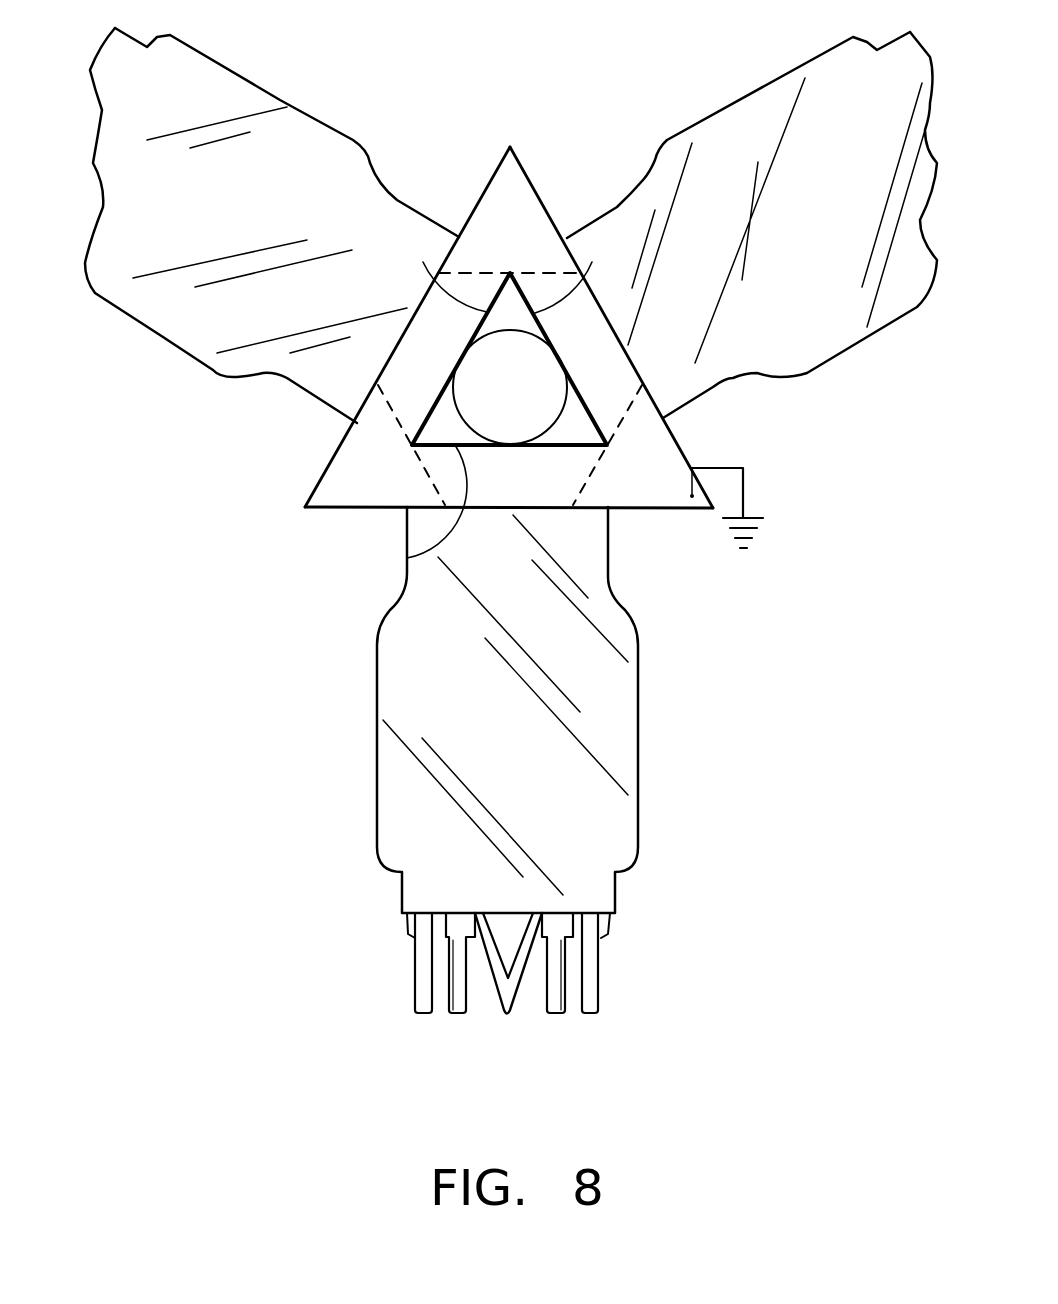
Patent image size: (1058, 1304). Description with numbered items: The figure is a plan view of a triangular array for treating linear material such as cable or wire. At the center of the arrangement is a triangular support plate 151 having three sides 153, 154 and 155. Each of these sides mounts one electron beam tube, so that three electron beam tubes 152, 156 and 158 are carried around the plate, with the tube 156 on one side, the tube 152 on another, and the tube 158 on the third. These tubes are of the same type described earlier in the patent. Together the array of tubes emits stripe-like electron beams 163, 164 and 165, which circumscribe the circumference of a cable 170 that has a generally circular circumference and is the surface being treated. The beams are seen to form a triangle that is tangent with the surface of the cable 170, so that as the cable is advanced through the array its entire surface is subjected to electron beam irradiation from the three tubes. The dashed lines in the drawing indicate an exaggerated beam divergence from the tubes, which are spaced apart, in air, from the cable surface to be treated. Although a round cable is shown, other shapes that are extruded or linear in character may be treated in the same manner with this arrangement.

The triangular support plate 151 is at (545, 130).
The electron beam tube 152 is at (838, 220).
The side of support plate 153 is at (678, 440).
The side of support plate 154 is at (333, 457).
The side of support plate 155 is at (657, 510).
The electron beam tube 156 is at (244, 216).
The electron beam tube 158 is at (514, 744).
The stripe-like electron beam 163 is at (585, 271).
The stripe-like electron beam 164 is at (440, 271).
The stripe-like electron beam 165 is at (420, 556).
The cable 170 is at (532, 401).